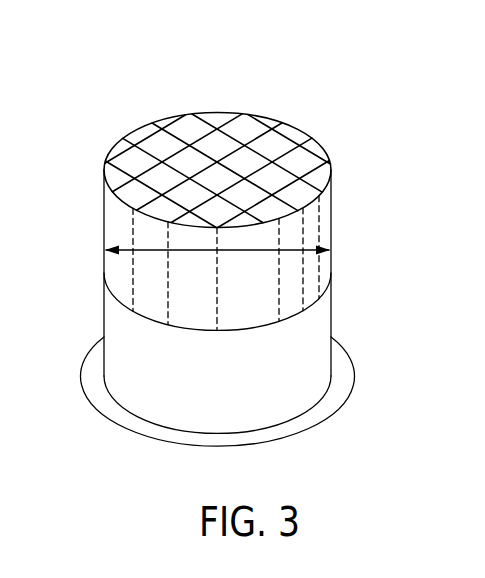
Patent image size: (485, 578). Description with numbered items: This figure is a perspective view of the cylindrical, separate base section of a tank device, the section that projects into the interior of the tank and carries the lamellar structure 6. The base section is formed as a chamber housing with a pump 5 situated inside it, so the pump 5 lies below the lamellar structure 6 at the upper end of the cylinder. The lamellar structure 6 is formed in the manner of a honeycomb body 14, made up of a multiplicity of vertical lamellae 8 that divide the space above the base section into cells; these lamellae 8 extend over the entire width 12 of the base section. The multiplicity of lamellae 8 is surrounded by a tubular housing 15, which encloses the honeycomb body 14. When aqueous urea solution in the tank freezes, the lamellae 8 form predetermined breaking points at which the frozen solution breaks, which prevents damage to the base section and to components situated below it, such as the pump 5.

The pump 5 is at (331, 314).
The lamellar structure 6 is at (331, 227).
The lamellae 8 is at (258, 117).
The width 12 is at (244, 251).
The honeycomb body 14 is at (192, 81).
The tubular housing 15 is at (110, 232).